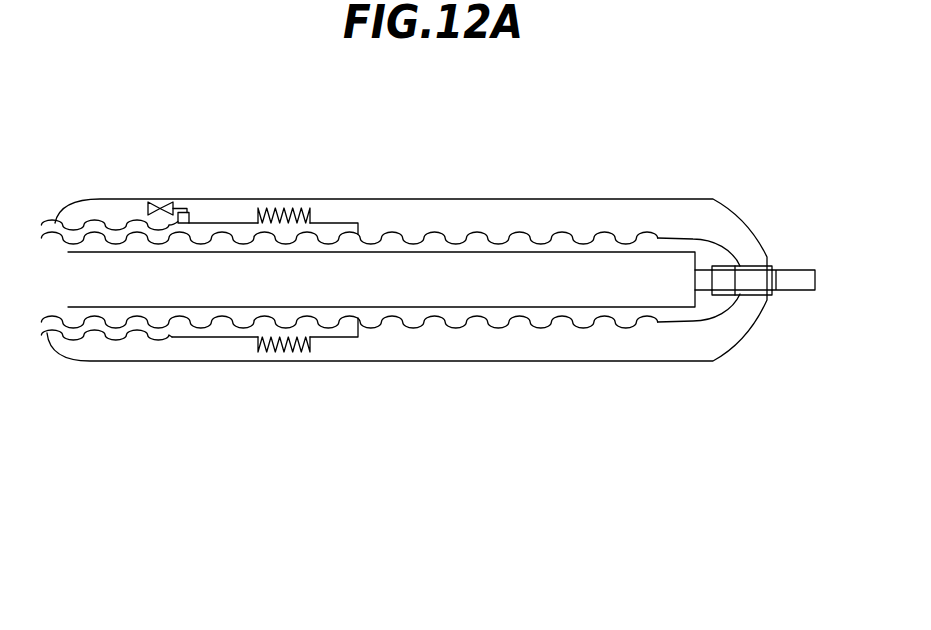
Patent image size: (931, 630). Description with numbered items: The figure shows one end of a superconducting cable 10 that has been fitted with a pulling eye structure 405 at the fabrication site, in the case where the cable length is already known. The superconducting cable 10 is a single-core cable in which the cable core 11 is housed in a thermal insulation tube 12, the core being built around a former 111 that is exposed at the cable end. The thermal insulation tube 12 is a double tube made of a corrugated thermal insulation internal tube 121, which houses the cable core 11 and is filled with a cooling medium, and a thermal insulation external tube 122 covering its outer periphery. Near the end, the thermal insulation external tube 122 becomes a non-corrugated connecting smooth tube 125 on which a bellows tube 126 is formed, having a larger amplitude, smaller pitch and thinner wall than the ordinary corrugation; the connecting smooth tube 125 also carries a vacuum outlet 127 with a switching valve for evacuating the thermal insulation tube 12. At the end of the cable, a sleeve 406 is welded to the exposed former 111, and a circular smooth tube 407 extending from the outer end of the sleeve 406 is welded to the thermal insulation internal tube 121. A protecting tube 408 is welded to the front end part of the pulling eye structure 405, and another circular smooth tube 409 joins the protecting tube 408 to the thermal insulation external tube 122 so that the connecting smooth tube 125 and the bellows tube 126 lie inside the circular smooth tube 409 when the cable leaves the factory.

The superconducting cable 10 is at (368, 328).
The cable core 11 is at (132, 308).
The thermal insulation tube 12 is at (349, 310).
The thermal insulation internal tube 121 is at (77, 327).
The thermal insulation external tube 122 is at (100, 332).
The connecting smooth tube 125 is at (338, 337).
The bellows tube 126 is at (277, 350).
The vacuum outlet 127 is at (180, 208).
The former 111 is at (702, 278).
The pulling eye structure 405 is at (431, 351).
The sleeve 406 is at (757, 294).
The circular smooth tube 407 is at (686, 322).
The protecting tube 408 is at (750, 296).
The circular smooth tube 409 is at (625, 361).